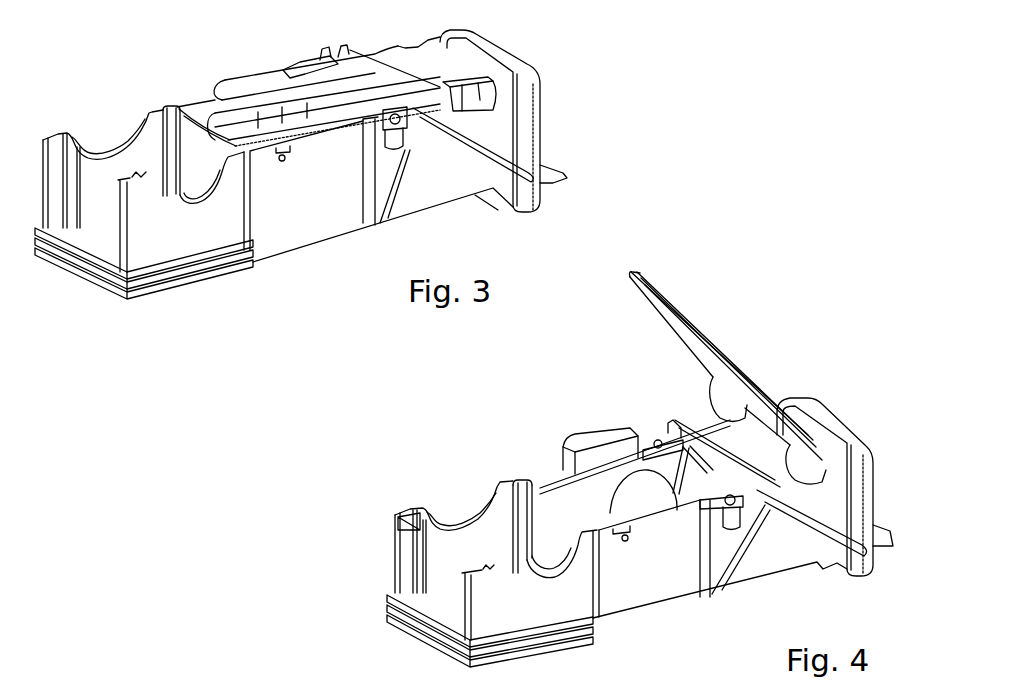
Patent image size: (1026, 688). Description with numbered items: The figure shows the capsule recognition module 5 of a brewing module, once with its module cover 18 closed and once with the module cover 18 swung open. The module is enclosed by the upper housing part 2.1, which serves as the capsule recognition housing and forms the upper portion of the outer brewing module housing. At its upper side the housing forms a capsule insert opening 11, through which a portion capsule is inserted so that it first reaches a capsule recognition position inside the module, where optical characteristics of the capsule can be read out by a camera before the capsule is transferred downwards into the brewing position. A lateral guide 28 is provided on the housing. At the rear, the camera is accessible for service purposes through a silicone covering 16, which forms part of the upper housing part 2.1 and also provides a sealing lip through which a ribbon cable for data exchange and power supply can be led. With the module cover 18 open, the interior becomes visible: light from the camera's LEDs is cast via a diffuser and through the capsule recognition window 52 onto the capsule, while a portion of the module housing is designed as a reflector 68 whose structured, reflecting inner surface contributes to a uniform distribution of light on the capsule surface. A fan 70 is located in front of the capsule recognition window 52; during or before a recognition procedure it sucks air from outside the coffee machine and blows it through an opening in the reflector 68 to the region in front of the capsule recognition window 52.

In FIG. 3, the capsule recognition module 5 is at (547, 47).
In FIG. 4, the capsule recognition module 5 is at (508, 448).
In FIG. 3, the capsule insert opening 11 is at (152, 140).
In FIG. 3, the silicone covering 16 is at (530, 118).
In FIG. 3, the module cover 18 is at (327, 100).
In FIG. 4, the module cover 18 is at (681, 330).
In FIG. 3, the lateral guide 28 is at (67, 157).
In FIG. 3, the upper housing part 2.1 is at (380, 197).
In FIG. 4, the capsule recognition window 52 is at (667, 423).
In FIG. 4, the reflector 68 is at (643, 558).
In FIG. 3, the fan 70 is at (288, 58).
In FIG. 4, the fan 70 is at (595, 448).